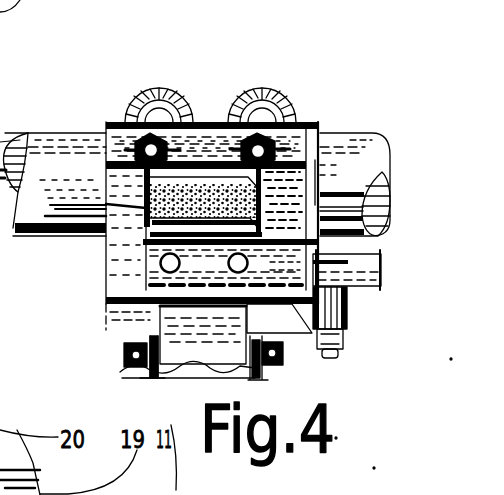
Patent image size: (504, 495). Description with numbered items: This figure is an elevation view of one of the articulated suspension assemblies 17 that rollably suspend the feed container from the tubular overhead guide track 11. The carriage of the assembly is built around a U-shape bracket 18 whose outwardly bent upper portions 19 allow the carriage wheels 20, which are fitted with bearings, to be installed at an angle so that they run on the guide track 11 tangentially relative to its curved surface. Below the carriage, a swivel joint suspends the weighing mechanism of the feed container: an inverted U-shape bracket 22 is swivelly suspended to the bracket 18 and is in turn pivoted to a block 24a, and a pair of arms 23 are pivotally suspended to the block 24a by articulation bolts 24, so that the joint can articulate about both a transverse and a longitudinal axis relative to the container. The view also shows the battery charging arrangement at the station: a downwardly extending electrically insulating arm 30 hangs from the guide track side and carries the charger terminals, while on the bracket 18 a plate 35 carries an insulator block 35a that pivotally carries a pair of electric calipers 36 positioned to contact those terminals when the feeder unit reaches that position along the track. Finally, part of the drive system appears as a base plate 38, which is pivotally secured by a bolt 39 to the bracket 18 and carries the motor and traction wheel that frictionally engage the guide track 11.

The overhead guide track 11 is at (357, 152).
The articulated suspension assembly 17 is at (88, 322).
The U-shape bracket 18 is at (122, 245).
The outwardly bent upper portion 19 is at (200, 136).
The carriage wheel 20 is at (127, 110).
The inverted U-shape bracket 22 is at (160, 321).
The arm 23 is at (147, 372).
The articulation bolt 24 is at (284, 354).
The block 24a is at (180, 390).
The electrically insulating arm 30 is at (10, 108).
The plate 35 is at (106, 298).
The insulator block 35a is at (258, 198).
The electric caliper 36 is at (67, 197).
The base plate 38 is at (372, 288).
The bolt 39 is at (340, 354).